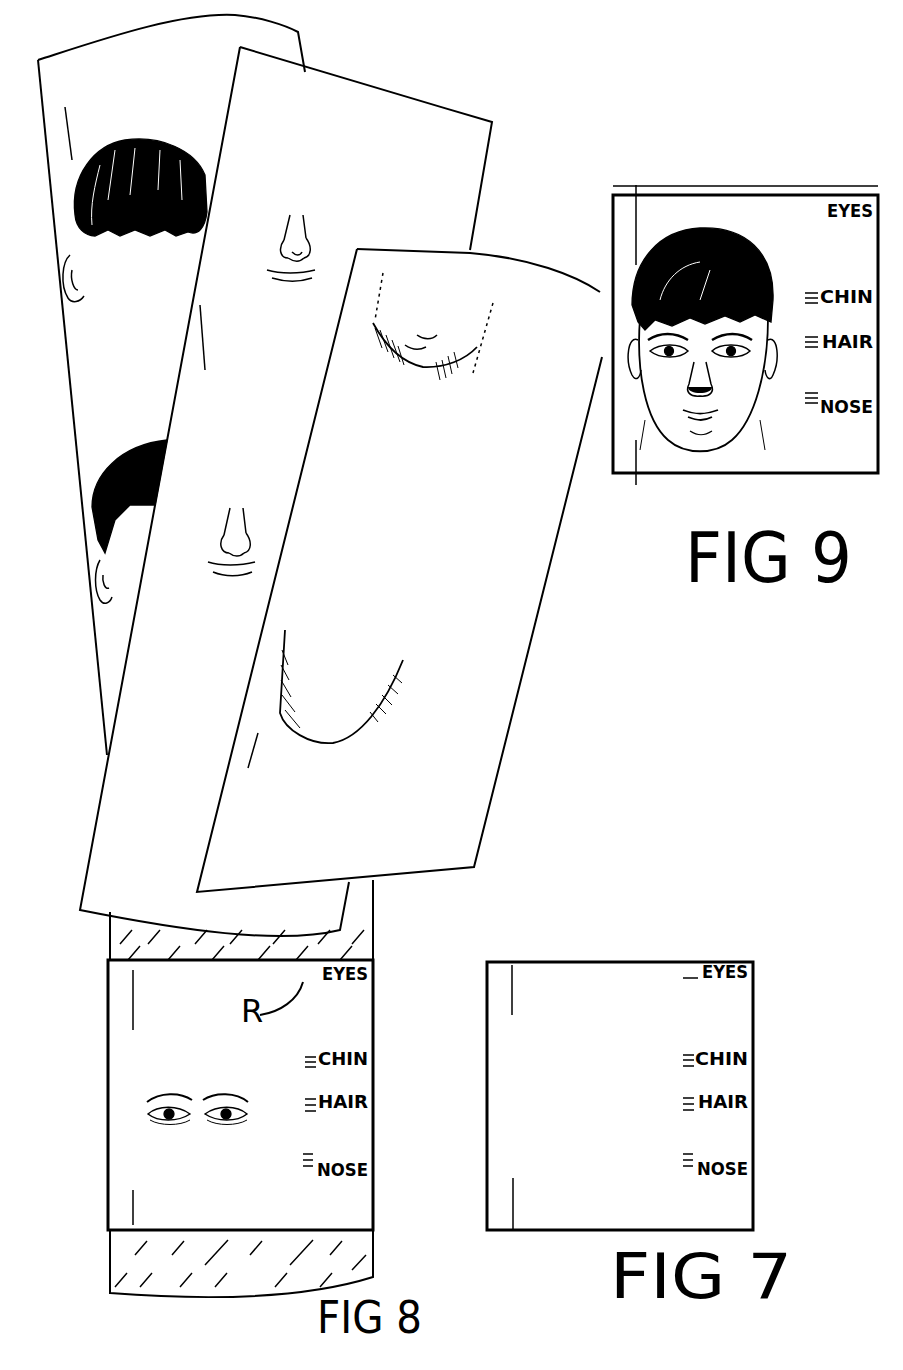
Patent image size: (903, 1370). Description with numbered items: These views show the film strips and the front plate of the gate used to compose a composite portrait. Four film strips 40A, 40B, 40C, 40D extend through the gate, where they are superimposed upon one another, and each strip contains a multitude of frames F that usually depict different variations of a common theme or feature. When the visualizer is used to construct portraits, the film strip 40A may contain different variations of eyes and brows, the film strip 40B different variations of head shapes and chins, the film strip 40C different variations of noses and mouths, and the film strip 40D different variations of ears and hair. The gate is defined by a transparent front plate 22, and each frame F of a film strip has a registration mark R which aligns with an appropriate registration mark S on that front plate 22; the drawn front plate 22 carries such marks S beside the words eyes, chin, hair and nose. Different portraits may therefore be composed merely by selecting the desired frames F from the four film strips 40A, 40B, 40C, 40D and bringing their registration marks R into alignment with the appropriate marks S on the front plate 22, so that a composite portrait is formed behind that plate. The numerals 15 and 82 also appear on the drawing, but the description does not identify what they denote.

In FIG. 8, the film strip 40A is at (367, 1257).
In FIG. 8, the film strip 40B is at (487, 692).
In FIG. 8, the film strip 40C is at (440, 212).
In FIG. 8, the film strip 40D is at (283, 48).
In FIG. 8, the eyes feature code 15 is at (320, 978).
In FIG. 9, the eyes feature code 15 is at (827, 215).
In FIG. 8, the front plate 22 is at (467, 633).
In FIG. 7, the front plate 22 is at (578, 985).
In FIG. 9, the front plate 22 is at (795, 352).
In FIG. 9, the hair feature code 82 is at (794, 342).
In FIG. 8, the registration mark R is at (467, 632).
In FIG. 8, the registration mark S is at (308, 980).
In FIG. 7, the registration mark S is at (680, 980).
In FIG. 8, the frame F is at (130, 332).